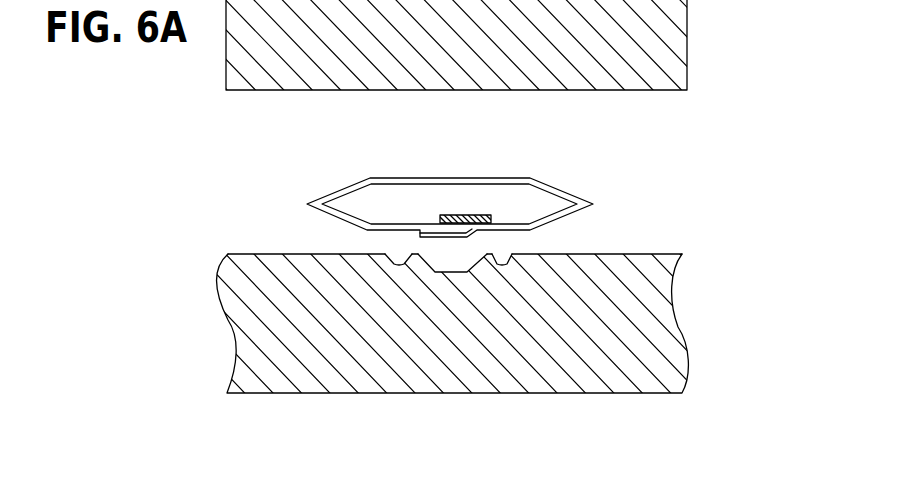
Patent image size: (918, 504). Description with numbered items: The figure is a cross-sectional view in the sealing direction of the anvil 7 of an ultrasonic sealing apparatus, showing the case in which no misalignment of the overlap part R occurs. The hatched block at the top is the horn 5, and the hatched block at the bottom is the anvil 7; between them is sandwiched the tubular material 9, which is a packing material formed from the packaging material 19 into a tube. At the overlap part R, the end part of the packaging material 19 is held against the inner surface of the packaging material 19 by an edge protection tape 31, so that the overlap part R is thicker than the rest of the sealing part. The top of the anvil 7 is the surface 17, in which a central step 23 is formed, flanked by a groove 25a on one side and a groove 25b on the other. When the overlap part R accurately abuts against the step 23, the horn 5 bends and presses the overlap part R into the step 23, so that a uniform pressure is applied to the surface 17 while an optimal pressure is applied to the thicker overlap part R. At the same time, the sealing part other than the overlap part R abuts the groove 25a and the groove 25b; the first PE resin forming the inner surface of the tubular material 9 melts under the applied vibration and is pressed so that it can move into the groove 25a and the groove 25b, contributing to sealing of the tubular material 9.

The horn 5 is at (665, 43).
The tubular material 9 is at (514, 164).
The packaging material 19 is at (563, 191).
The edge protection tape 31 is at (463, 213).
The overlap part R is at (450, 237).
The anvil 7 is at (462, 332).
The surface 17 is at (668, 254).
The groove 25a is at (398, 265).
The step 23 is at (450, 272).
The groove 25b is at (503, 264).